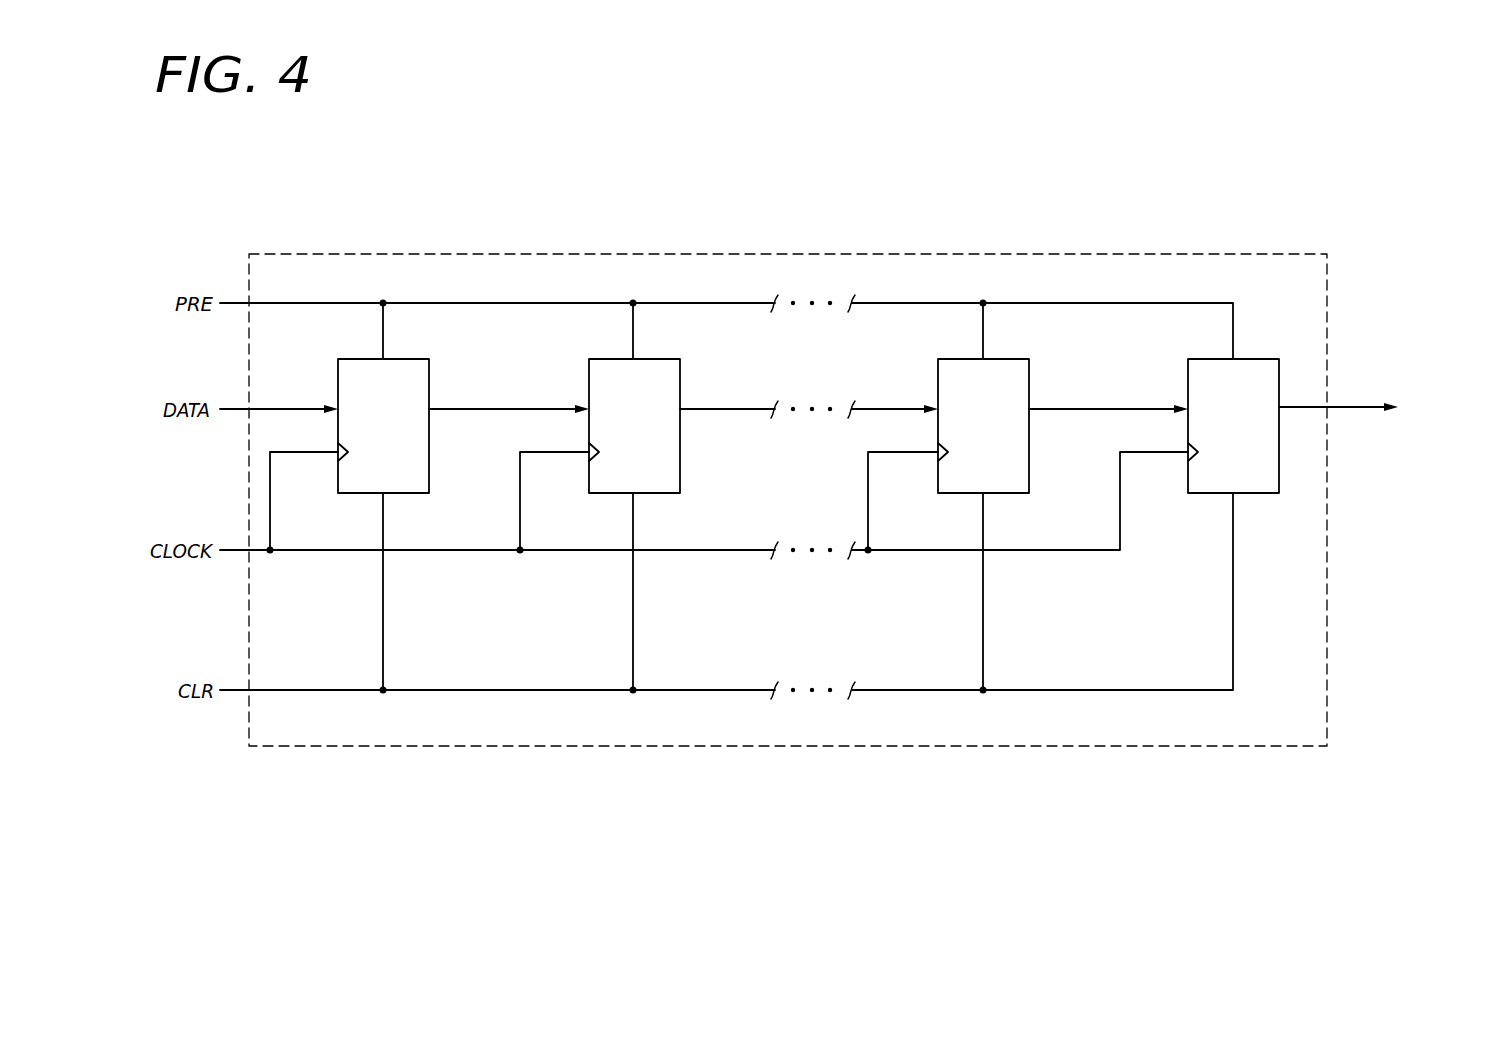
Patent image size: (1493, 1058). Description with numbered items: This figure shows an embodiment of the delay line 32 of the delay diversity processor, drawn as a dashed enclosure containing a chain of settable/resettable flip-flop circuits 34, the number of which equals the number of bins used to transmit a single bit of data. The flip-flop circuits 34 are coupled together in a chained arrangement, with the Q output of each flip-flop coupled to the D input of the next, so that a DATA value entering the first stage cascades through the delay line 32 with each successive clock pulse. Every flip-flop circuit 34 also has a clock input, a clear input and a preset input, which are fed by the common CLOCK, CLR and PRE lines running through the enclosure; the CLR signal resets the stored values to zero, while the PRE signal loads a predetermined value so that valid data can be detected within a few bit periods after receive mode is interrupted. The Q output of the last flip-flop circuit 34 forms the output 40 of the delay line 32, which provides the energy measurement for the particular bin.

The delay line 32 is at (792, 747).
The flip-flop circuits 34 is at (429, 380).
The output 40 is at (1362, 407).